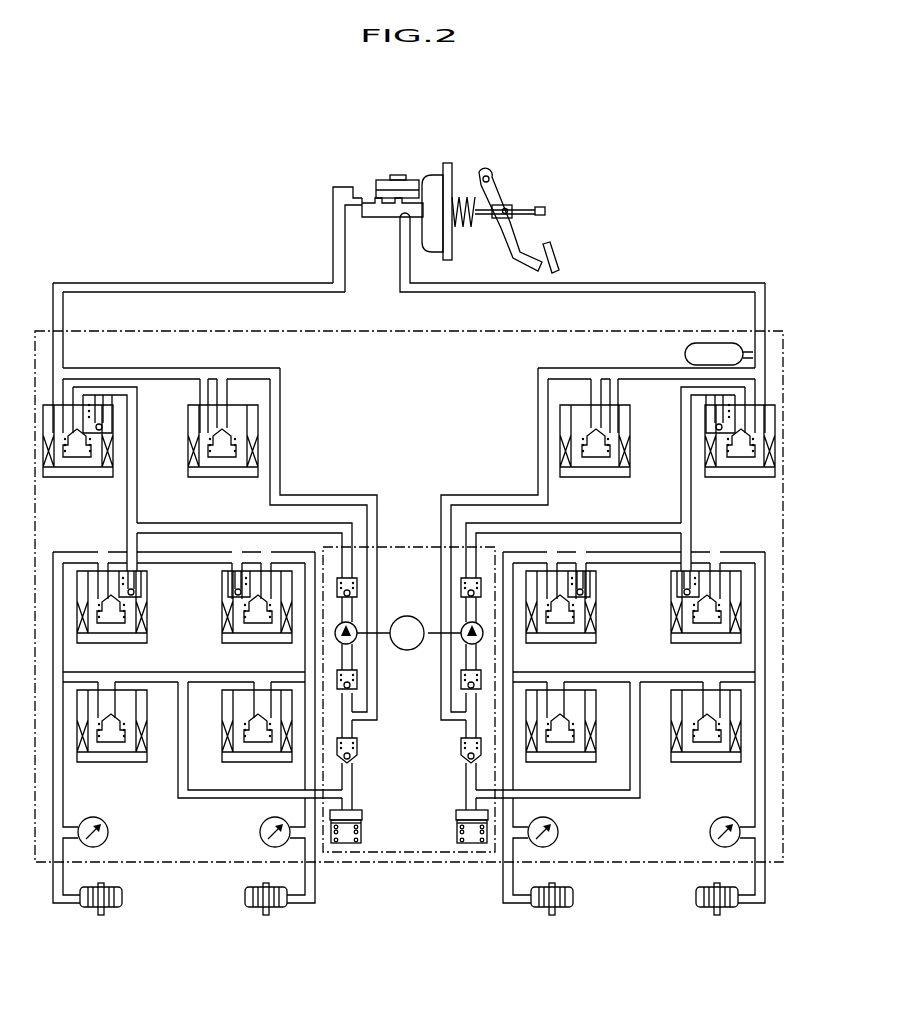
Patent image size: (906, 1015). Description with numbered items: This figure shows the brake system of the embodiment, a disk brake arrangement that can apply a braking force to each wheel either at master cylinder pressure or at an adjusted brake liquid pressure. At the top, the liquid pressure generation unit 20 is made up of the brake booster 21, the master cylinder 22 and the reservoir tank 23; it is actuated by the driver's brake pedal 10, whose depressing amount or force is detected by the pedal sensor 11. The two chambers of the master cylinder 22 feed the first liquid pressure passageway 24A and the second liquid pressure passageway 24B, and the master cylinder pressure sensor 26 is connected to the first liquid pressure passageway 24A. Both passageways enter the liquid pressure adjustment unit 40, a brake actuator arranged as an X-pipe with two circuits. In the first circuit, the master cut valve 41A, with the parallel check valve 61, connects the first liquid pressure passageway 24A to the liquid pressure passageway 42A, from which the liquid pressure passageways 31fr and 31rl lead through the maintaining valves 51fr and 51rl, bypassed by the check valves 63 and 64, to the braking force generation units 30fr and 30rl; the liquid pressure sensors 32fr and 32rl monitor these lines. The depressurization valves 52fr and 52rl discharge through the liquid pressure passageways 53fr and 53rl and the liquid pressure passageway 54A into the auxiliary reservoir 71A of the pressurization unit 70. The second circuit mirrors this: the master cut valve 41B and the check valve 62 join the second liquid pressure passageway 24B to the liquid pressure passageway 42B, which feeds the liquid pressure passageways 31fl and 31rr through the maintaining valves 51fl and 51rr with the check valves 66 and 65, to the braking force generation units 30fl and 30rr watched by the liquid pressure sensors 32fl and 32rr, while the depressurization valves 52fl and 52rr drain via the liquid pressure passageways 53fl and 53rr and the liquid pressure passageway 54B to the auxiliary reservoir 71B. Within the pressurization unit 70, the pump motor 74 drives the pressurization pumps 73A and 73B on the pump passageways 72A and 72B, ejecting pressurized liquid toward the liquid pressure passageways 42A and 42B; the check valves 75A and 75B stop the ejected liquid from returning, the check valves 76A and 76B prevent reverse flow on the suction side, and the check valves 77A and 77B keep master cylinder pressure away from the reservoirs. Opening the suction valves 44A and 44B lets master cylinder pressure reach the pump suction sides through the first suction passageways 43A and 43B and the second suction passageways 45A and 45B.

The brake pedal 10 is at (556, 259).
The pedal sensor 11 is at (538, 205).
The liquid pressure generation unit 20 is at (351, 139).
The brake booster 21 is at (431, 172).
The master cylinder 22 is at (376, 218).
The reservoir tank 23 is at (399, 175).
The first liquid pressure passageway 24A is at (637, 283).
The second liquid pressure passageway 24B is at (222, 283).
The master cylinder pressure sensor 26 is at (685, 354).
The braking force generation unit 30fl is at (123, 903).
The braking force generation unit 30fr is at (695, 903).
The braking force generation unit 30rl is at (574, 903).
The braking force generation unit 30rr is at (244, 903).
The liquid pressure passageway 31fl is at (53, 905).
The liquid pressure passageway 31fr is at (766, 895).
The liquid pressure passageway 31rl is at (502, 888).
The liquid pressure passageway 31rr is at (316, 888).
The liquid pressure sensor 32fl is at (110, 832).
The liquid pressure sensor 32fr is at (709, 832).
The liquid pressure sensor 32rl is at (559, 832).
The liquid pressure sensor 32rr is at (259, 832).
The liquid pressure adjustment unit 40 is at (378, 330).
The master cut valve 41A is at (709, 456).
The master cut valve 41B is at (108, 456).
The liquid pressure passageway 42A is at (680, 470).
The liquid pressure passageway 42B is at (139, 470).
The first suction passageway 43A is at (536, 427).
The first suction passageway 43B is at (282, 427).
The suction valve 44A is at (578, 478).
The suction valve 44B is at (240, 478).
The second suction passageway 45A is at (625, 368).
The second suction passageway 45B is at (113, 368).
The maintaining valve 51fl is at (137, 603).
The maintaining valve 51fr is at (678, 603).
The maintaining valve 51rl is at (588, 603).
The maintaining valve 51rr is at (228, 603).
The depressurization valve 52fl is at (105, 762).
The depressurization valve 52fr is at (714, 763).
The depressurization valve 52rl is at (597, 747).
The depressurization valve 52rr is at (224, 745).
The liquid pressure passageway 53fl is at (168, 672).
The liquid pressure passageway 53fr is at (649, 672).
The liquid pressure passageway 53rl is at (618, 672).
The liquid pressure passageway 53rr is at (200, 672).
The liquid pressure passageway 54A is at (640, 782).
The liquid pressure passageway 54B is at (178, 782).
The check valve 61 is at (716, 425).
The check valve 62 is at (102, 425).
The check valve 63 is at (685, 592).
The check valve 64 is at (583, 592).
The check valve 65 is at (236, 592).
The check valve 66 is at (134, 592).
The pressurization unit 70 is at (404, 547).
The auxiliary reservoir 71A is at (453, 817).
The auxiliary reservoir 71B is at (365, 817).
The pump passageway 72A is at (626, 523).
The pump passageway 72B is at (190, 523).
The pressurization pump 73A is at (484, 636).
The pressurization pump 73B is at (334, 636).
The pump motor 74 is at (395, 615).
The check valve 75A is at (460, 590).
The check valve 75B is at (358, 585).
The check valve 76A is at (460, 682).
The check valve 76B is at (358, 682).
The check valve 77A is at (460, 750).
The check valve 77B is at (358, 750).